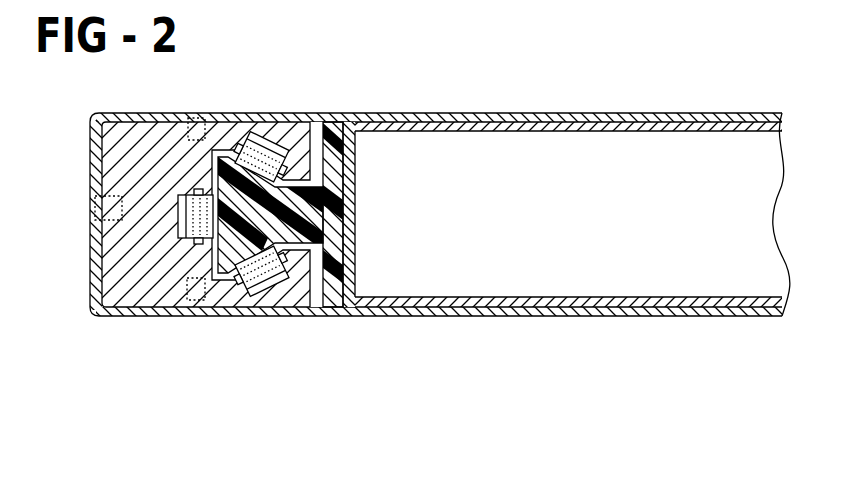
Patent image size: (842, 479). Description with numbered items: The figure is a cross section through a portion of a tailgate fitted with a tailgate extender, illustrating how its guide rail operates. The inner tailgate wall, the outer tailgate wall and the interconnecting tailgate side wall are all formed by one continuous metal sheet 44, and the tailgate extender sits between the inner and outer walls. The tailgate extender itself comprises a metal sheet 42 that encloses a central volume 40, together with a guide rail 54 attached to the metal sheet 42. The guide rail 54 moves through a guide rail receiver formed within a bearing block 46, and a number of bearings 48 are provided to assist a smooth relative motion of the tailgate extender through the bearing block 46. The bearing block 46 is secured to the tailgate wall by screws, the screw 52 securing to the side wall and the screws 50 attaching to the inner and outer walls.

The central volume 40 is at (588, 207).
The metal sheet 42 is at (622, 122).
The continuous metal sheet 44 is at (613, 317).
The bearing block 46 is at (120, 263).
The bearings 48 is at (180, 212).
The screws 50 is at (205, 118).
The screw 52 is at (97, 198).
The guide rail 54 is at (266, 221).